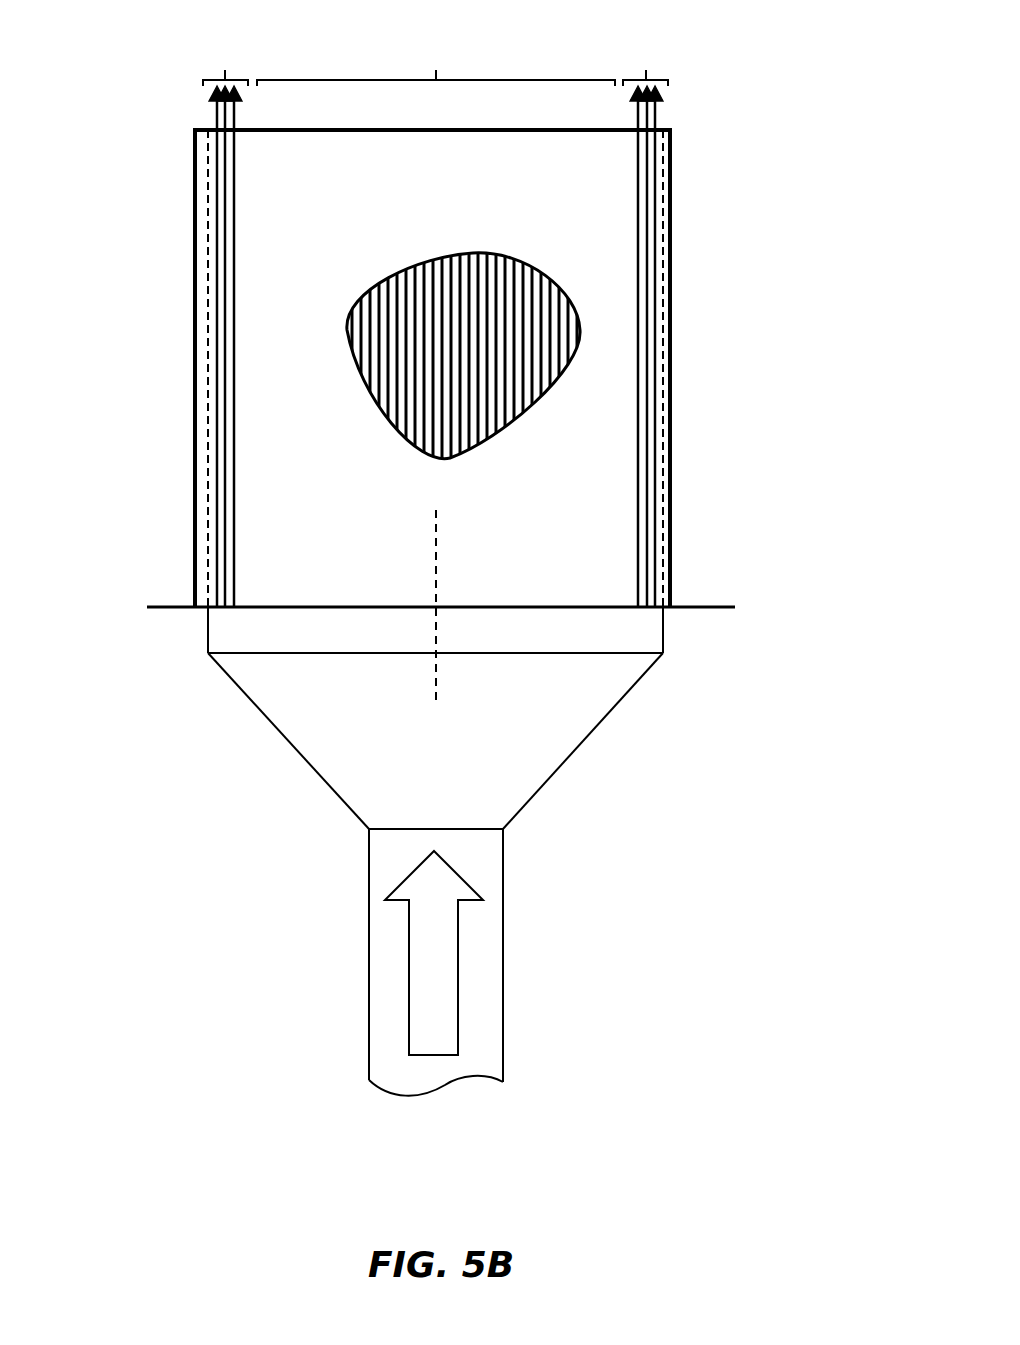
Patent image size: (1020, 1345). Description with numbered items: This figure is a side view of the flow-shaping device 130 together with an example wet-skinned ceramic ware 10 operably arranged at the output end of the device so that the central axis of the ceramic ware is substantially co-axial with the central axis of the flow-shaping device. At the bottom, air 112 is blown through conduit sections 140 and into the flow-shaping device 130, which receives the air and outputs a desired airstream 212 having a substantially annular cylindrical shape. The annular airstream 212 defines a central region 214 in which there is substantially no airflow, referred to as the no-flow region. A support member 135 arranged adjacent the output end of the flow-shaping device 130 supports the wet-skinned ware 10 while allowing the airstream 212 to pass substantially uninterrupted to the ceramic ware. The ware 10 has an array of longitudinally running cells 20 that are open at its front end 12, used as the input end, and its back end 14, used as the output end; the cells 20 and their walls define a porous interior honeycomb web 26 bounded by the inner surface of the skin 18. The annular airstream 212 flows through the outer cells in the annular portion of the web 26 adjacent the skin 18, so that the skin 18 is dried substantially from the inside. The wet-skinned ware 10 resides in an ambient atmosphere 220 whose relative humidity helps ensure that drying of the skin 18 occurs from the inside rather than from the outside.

The wet-skinned ceramic ware 10 is at (742, 137).
The front end 12 is at (240, 608).
The back end 14 is at (669, 130).
The skin 18 is at (203, 185).
The cells 20 is at (552, 262).
The web 26 is at (598, 326).
The air 112 is at (455, 970).
The flow-shaping device 130 is at (630, 785).
The support member 135 is at (702, 607).
The conduit sections 140 is at (369, 993).
The annular airstream 212 is at (436, 56).
The central region 214 is at (436, 56).
The ambient atmosphere 220 is at (150, 377).